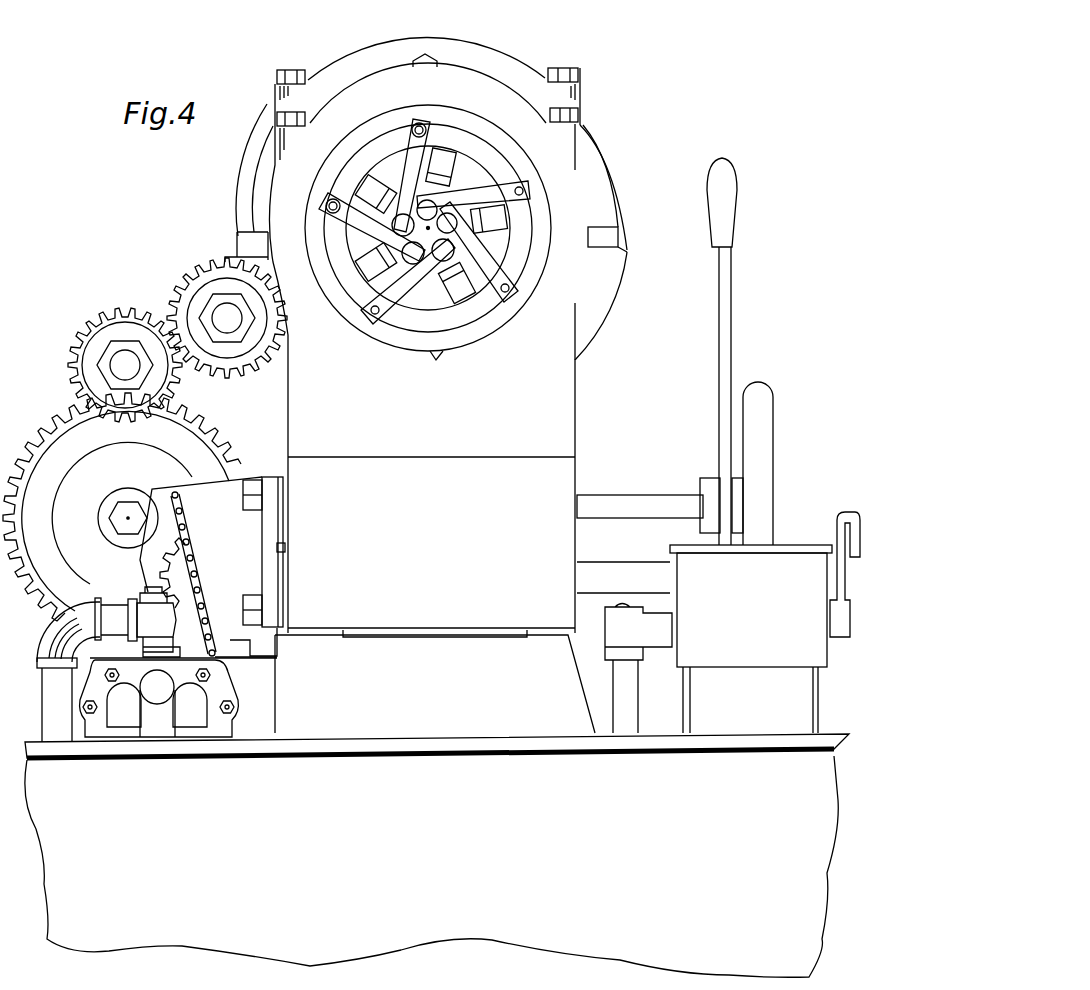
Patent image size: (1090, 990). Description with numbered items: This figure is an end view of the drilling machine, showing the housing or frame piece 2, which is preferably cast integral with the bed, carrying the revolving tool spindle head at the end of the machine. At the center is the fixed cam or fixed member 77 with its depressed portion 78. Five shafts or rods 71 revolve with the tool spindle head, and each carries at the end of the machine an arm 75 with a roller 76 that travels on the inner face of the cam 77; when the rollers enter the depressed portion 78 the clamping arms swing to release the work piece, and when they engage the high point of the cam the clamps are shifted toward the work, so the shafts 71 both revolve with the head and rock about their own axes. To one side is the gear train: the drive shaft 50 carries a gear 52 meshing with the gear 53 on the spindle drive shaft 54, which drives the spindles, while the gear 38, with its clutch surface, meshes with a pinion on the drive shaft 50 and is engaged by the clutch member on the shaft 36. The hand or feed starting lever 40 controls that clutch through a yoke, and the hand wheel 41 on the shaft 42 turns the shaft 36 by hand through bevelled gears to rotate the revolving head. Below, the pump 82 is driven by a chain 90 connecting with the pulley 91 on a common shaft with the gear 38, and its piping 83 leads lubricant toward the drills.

The housing or frame piece 2 is at (570, 423).
The shaft 36 is at (115, 512).
The gear 38 is at (37, 430).
The hand or feed starting lever 40 is at (717, 306).
The hand wheel 41 is at (758, 427).
The shaft 42 is at (618, 505).
The drive shaft 50 is at (125, 365).
The gear 52 is at (110, 320).
The gear 53 is at (190, 270).
The spindle drive shaft 54 is at (227, 318).
The shaft or rod 71 is at (378, 195).
The arm 75 is at (403, 180).
The roller 76 is at (415, 124).
The cam or fixed member 77 is at (325, 197).
The depressed portion 78 is at (433, 352).
The pump outlet 82 is at (165, 717).
The piping 83 is at (60, 723).
The chain 90 is at (197, 548).
The pulley 91 is at (168, 522).